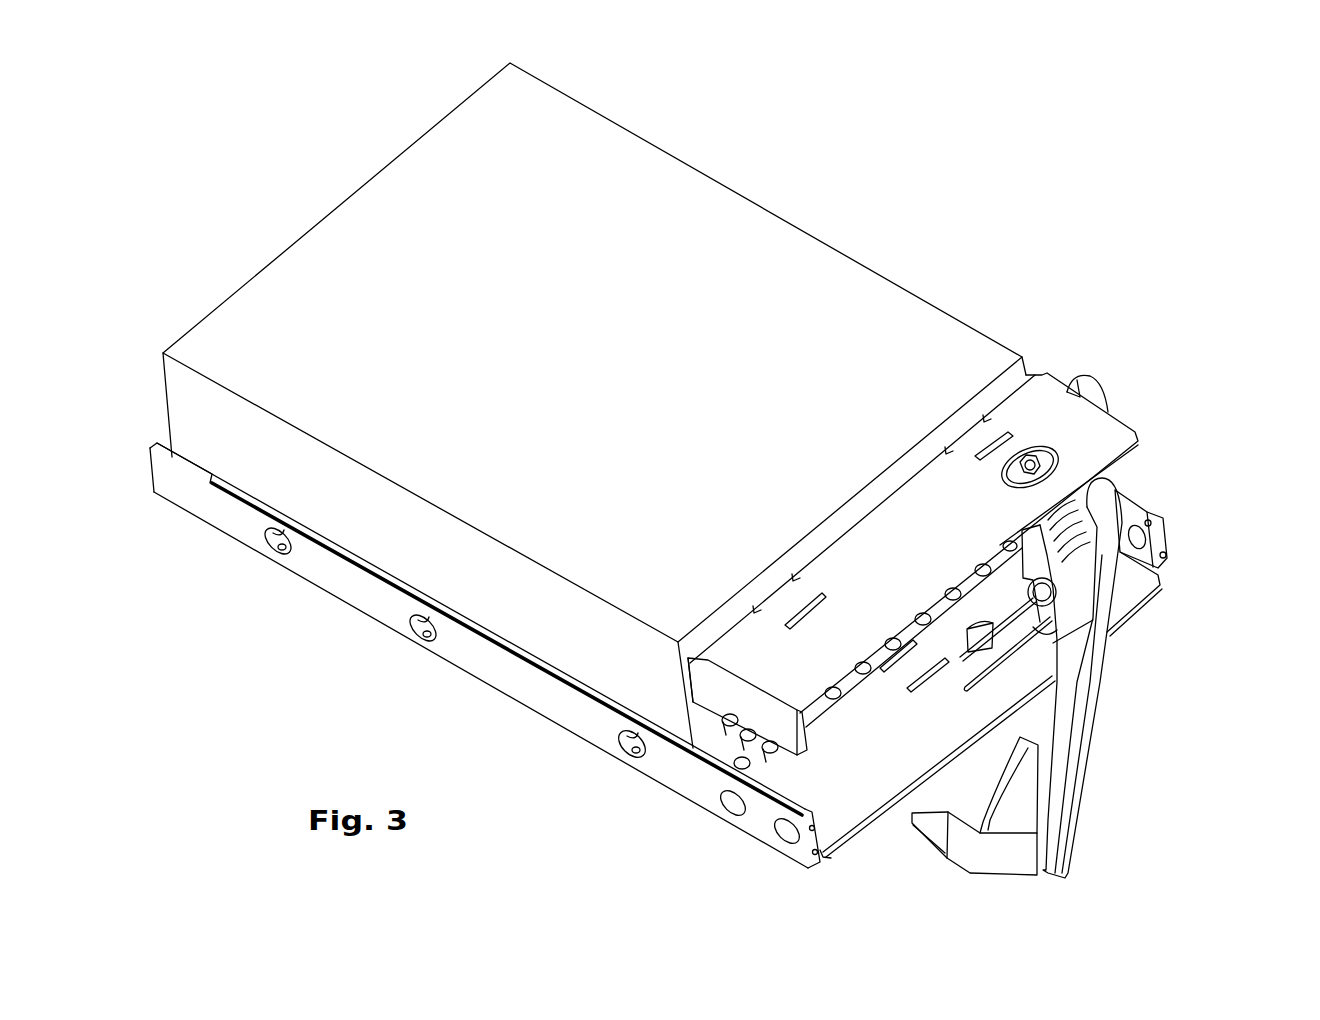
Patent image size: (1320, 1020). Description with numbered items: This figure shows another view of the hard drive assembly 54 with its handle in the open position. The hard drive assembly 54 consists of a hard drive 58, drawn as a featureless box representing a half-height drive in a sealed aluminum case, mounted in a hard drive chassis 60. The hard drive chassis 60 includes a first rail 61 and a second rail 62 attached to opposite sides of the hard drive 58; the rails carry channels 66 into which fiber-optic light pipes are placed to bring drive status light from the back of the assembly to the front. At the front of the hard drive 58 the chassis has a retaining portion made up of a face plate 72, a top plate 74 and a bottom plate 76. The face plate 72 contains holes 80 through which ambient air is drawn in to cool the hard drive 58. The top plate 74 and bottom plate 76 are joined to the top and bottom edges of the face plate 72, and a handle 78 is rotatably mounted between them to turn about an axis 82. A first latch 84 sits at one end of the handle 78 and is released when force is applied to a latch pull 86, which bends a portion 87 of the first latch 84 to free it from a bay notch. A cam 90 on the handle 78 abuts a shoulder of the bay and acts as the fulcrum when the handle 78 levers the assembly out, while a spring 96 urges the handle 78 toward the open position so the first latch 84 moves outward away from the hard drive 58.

The hard drive assembly 54 is at (842, 122).
The hard drive 58 is at (507, 338).
The hard drive chassis 60 is at (1237, 330).
The first rail 61 is at (223, 513).
The second rail 62 is at (1128, 505).
The channels 66 is at (798, 855).
The face plate 72 is at (700, 752).
The top plate 74 is at (873, 553).
The bottom plate 76 is at (822, 788).
The handle 78 is at (1097, 670).
The holes 80 is at (728, 737).
The axis 82 is at (1030, 466).
The first latch 84 is at (927, 840).
The latch pull 86 is at (1018, 803).
The portion 87 is at (988, 860).
The cam 90 is at (1092, 387).
The spring 96 is at (968, 688).